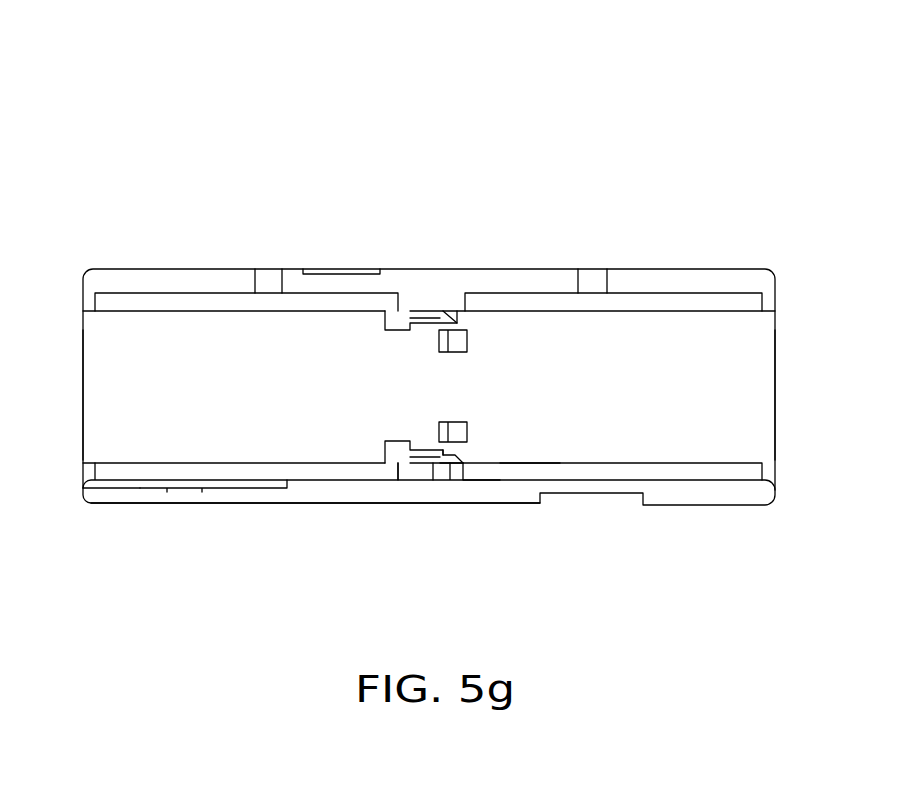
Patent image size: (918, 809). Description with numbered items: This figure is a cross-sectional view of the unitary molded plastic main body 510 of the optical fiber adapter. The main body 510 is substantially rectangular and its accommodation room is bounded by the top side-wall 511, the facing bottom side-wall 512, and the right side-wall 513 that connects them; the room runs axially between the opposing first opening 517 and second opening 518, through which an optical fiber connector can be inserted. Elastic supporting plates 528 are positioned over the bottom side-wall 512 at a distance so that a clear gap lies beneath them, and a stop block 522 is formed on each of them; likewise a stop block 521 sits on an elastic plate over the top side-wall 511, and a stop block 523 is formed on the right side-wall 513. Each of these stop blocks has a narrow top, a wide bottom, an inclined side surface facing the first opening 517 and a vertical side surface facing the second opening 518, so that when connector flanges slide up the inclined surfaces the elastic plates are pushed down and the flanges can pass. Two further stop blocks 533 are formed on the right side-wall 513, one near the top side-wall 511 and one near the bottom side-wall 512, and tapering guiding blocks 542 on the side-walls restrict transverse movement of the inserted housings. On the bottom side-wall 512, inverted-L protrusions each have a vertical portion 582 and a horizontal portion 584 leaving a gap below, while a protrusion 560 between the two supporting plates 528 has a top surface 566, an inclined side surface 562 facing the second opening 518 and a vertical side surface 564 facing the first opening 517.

The main body 510 is at (459, 96).
The top side-wall 511 is at (293, 272).
The bottom side-wall 512 is at (200, 505).
The right side-wall 513 is at (192, 336).
The first opening 517 is at (745, 387).
The second opening 518 is at (118, 385).
The stop block 521 is at (441, 312).
The stop block 522 is at (448, 457).
The stop block 523 is at (458, 338).
The elastic supporting plate 528 is at (443, 464).
The stop block 533 is at (394, 321).
The guiding block 542 is at (422, 316).
The protrusion 560 is at (437, 470).
The inclined side surface 562 is at (438, 460).
The vertical side surface 564 is at (438, 466).
The top surface 566 is at (437, 467).
The vertical portion 582 is at (97, 488).
The horizontal portion 584 is at (143, 483).